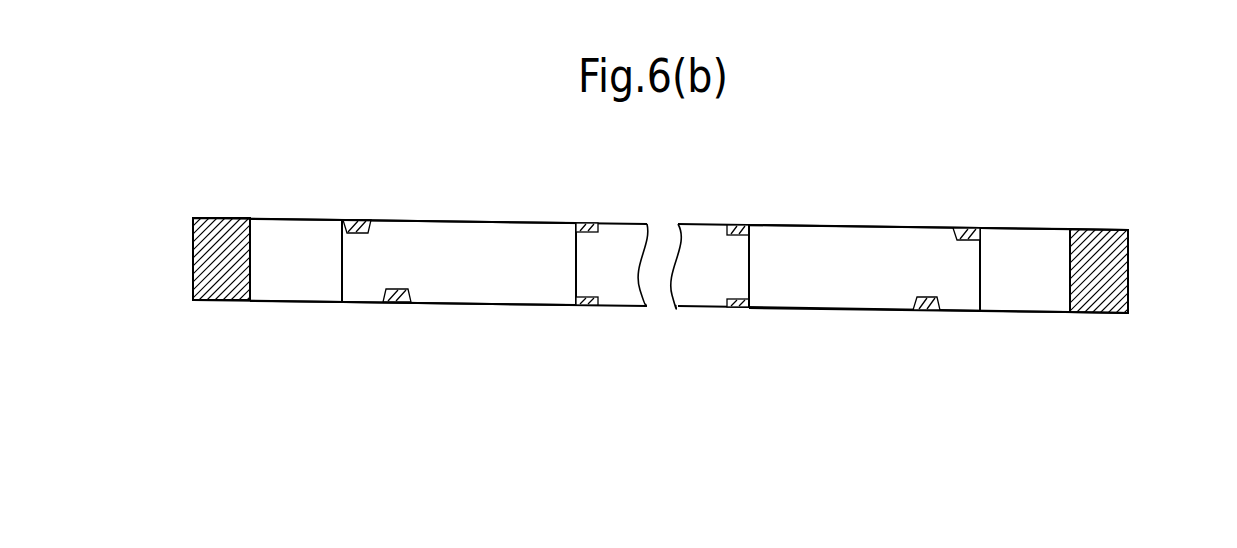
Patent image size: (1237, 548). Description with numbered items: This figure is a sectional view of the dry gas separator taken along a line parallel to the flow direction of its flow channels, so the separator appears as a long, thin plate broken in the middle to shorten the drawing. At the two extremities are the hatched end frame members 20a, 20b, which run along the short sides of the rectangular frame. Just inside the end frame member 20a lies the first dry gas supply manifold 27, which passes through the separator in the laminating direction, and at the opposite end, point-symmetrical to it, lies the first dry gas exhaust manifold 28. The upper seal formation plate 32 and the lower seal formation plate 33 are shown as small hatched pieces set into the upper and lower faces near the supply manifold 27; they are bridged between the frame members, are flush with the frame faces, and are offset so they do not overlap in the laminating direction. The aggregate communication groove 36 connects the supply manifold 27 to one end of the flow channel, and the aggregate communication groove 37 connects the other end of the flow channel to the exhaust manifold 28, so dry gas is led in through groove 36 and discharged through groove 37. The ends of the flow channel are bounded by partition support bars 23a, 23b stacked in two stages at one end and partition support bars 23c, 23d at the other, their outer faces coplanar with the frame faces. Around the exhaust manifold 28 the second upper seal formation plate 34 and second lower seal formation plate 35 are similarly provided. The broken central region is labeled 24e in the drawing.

The end frame member 20a is at (222, 218).
The end frame member 20b is at (1094, 230).
The first dry gas supply manifold 27 is at (312, 273).
The first dry gas exhaust manifold 28 is at (1053, 290).
The upper seal formation plate 32 is at (357, 220).
The lower seal formation plate 33 is at (392, 303).
The second upper seal formation plate 34 is at (970, 228).
The second lower seal formation plate 35 is at (925, 309).
The aggregate communication groove 36 is at (445, 247).
The aggregate communication groove 37 is at (845, 243).
The partition support bar 23a is at (590, 223).
The partition support bar 23b is at (592, 303).
The partition support bar 23c is at (740, 225).
The partition support bar 23d is at (738, 307).
The shaft body 24e is at (650, 225).